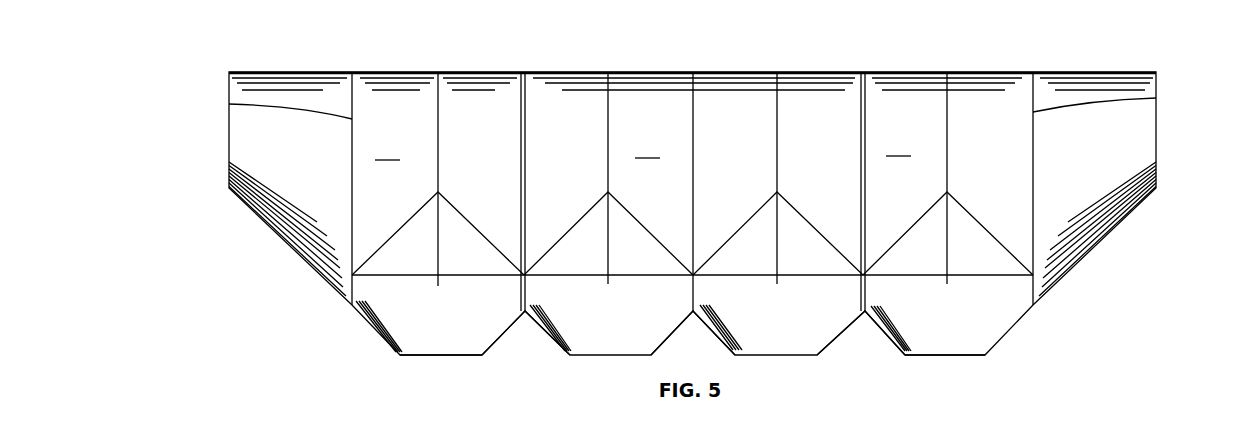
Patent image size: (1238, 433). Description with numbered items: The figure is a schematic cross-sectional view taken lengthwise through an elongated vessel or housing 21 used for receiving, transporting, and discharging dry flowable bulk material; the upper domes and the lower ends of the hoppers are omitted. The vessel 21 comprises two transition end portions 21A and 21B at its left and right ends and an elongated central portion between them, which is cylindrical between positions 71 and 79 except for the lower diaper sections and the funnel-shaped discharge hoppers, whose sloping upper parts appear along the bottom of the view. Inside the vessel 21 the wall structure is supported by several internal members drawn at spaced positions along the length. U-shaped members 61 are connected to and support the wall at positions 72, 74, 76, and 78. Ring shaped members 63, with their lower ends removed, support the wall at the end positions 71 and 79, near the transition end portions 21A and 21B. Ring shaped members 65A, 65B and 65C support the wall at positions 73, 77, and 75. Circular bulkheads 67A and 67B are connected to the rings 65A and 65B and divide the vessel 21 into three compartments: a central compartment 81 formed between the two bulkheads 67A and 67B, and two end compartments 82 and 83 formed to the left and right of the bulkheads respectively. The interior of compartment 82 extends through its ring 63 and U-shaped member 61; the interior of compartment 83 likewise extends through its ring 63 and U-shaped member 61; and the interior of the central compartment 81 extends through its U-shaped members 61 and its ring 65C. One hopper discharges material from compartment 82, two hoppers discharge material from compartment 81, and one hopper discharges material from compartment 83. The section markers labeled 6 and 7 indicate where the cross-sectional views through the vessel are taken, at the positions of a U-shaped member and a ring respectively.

The vessel 21 is at (1106, 243).
The transition end portion 21A is at (250, 134).
The transition end portion 21B is at (1127, 138).
The U-shaped member 61 is at (438, 262).
The ring shaped member 63 is at (229, 104).
The ring shaped member 65A is at (535, 315).
The ring shaped member 65B is at (863, 305).
The ring shaped member 65C is at (693, 305).
The circular bulkhead 67A is at (522, 300).
The circular bulkhead 67B is at (867, 292).
The position 71 is at (352, 72).
The position 72 is at (438, 72).
The position 73 is at (525, 72).
The position 74 is at (608, 72).
The position 75 is at (693, 72).
The position 76 is at (777, 72).
The position 77 is at (865, 72).
The position 78 is at (947, 72).
The position 79 is at (1033, 72).
The central compartment 81 is at (647, 150).
The end compartment 82 is at (387, 152).
The end compartment 83 is at (898, 148).
The section line for FIG. 6 is at (437, 68).
The section line for FIG. 7 is at (522, 68).